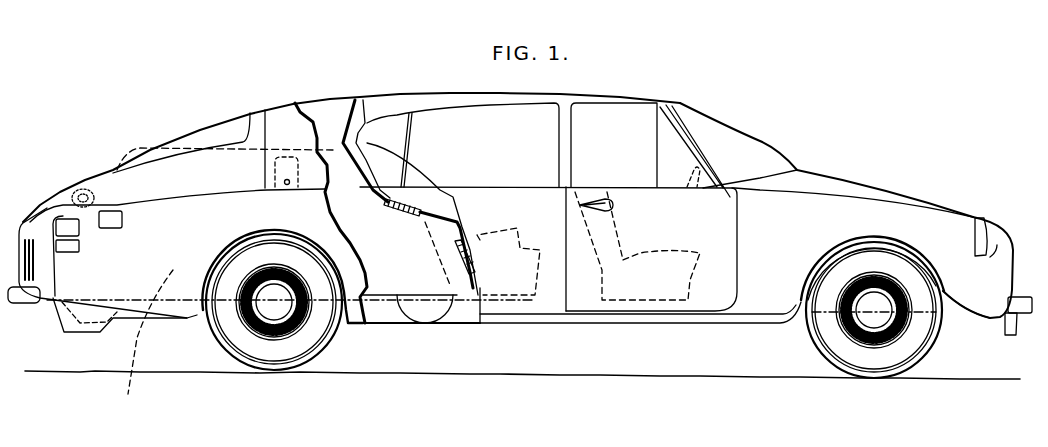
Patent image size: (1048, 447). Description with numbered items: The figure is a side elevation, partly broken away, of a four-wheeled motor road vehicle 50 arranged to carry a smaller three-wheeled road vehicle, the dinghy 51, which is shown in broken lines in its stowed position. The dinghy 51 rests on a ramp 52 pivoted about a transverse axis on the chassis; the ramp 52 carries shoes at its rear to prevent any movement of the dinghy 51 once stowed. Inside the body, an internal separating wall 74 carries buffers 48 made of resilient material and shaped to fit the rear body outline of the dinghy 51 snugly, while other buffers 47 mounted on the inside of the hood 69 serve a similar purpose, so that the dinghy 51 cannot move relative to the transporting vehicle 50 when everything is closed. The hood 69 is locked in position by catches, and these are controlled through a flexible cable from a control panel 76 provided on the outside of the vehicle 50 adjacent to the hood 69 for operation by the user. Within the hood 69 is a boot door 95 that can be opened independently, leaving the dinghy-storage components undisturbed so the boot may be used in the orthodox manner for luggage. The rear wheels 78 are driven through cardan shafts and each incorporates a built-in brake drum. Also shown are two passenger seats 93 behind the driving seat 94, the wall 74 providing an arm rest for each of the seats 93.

The boot door 95 is at (185, 123).
The control panel 76 is at (288, 162).
The internal separating wall 74 is at (363, 100).
The buffers 48 is at (400, 203).
The four-wheeled motor road vehicle 50 is at (753, 227).
The hood 69 is at (62, 207).
The buffers 47 is at (80, 192).
The ramp 52 is at (80, 333).
The dinghy 51 is at (140, 343).
The rear wheels 78 is at (285, 357).
The passenger seats 93 is at (513, 288).
The driving seat 94 is at (653, 287).